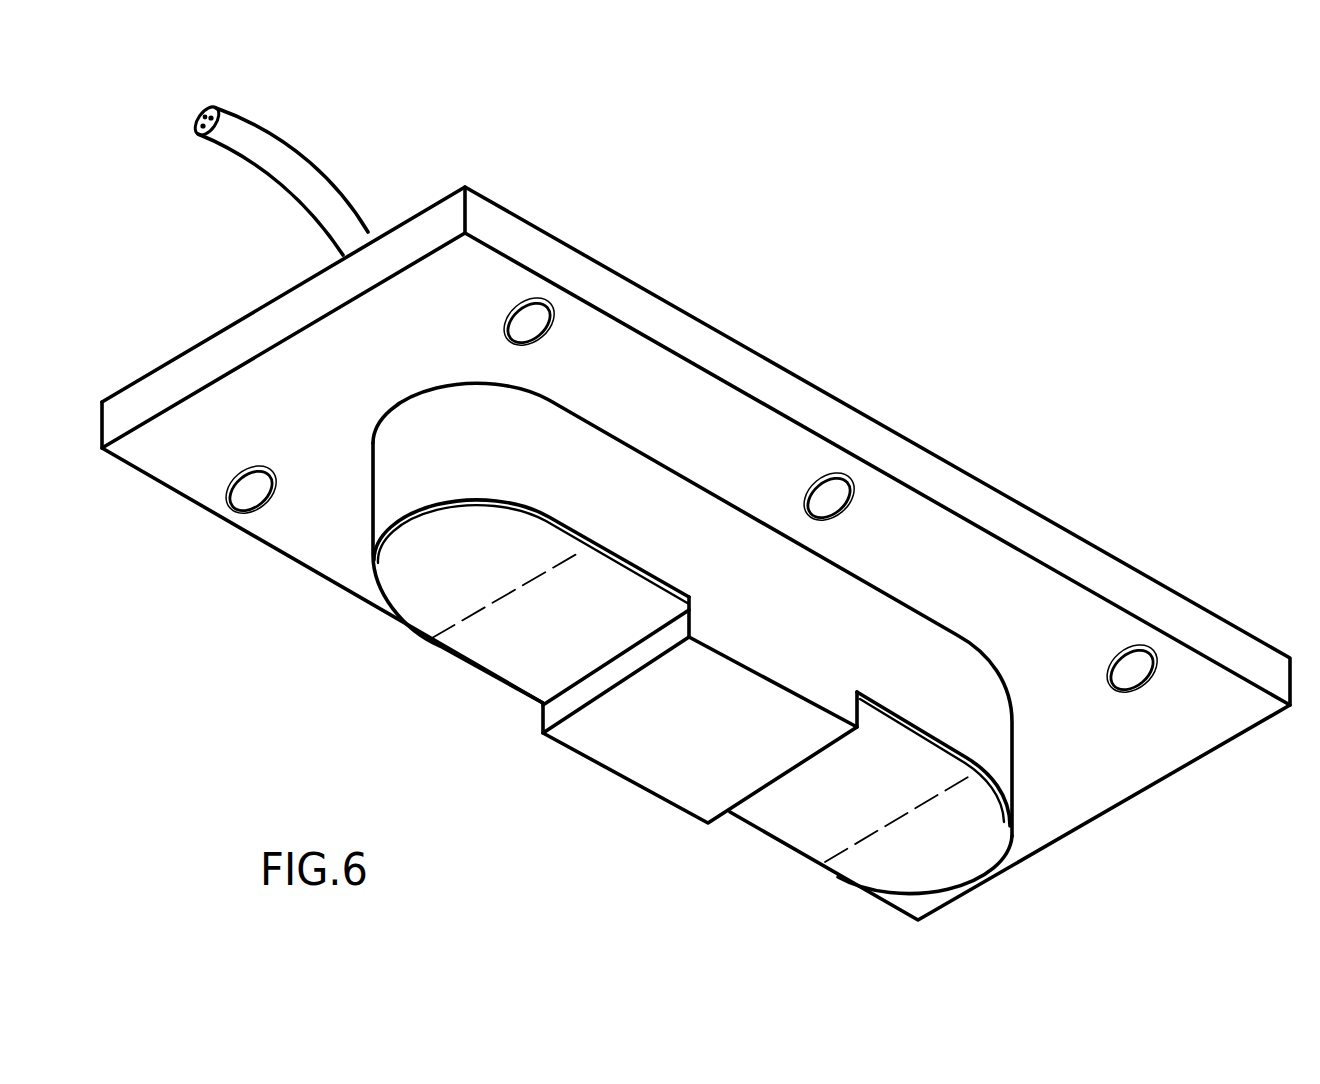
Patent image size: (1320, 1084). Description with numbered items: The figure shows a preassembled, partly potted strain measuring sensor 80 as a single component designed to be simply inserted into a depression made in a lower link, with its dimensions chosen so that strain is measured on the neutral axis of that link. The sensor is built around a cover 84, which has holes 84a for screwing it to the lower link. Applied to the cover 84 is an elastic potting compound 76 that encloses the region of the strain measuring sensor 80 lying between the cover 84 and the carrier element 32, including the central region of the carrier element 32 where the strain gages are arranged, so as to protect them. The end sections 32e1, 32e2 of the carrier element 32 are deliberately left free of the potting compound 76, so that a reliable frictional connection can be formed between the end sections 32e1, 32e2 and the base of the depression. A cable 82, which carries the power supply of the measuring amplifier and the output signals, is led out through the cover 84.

The carrier element 32 is at (905, 725).
The end section 32e1 is at (463, 592).
The end section 32e2 is at (963, 873).
The elastic potting compound 76 is at (845, 618).
The strain measuring sensor 80 is at (826, 298).
The cable 82 is at (283, 155).
The cover 84 is at (950, 488).
The holes 84a is at (540, 327).